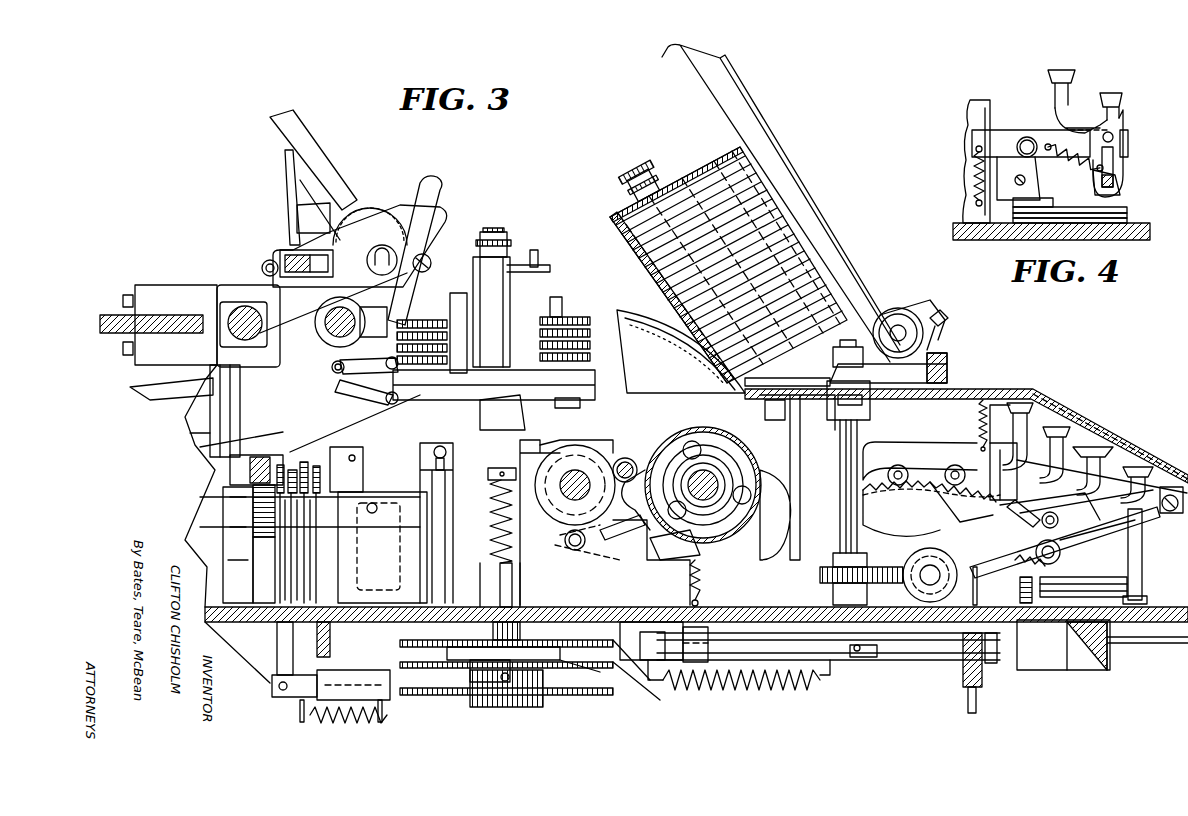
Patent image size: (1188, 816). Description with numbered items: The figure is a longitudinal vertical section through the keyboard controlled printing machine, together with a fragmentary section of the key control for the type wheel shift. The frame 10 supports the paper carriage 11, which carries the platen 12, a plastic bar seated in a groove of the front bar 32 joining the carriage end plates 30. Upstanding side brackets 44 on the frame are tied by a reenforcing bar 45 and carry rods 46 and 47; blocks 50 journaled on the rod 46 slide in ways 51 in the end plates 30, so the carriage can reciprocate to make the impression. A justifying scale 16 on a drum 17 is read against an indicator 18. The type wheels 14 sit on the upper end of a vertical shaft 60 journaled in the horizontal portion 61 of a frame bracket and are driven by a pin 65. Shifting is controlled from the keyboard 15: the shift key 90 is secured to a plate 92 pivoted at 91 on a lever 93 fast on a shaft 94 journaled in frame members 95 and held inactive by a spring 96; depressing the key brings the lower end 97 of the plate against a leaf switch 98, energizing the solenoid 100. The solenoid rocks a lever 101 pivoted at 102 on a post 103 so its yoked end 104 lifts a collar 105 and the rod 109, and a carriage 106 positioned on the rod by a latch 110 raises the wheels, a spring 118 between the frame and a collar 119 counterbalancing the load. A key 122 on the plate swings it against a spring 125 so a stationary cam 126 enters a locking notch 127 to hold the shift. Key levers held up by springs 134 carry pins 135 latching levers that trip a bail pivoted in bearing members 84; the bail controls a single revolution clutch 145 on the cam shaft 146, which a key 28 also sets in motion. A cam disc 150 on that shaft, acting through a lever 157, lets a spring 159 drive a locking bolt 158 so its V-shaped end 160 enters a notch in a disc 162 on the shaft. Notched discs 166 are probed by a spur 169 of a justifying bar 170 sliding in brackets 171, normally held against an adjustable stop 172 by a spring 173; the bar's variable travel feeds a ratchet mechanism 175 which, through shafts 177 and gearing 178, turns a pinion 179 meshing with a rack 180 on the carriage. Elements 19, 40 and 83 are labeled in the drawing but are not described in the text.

In FIG. 3, the frame 10 is at (572, 605).
In FIG. 4, the frame 10 is at (1150, 236).
In FIG. 3, the paper carriage 11 is at (428, 250).
In FIG. 3, the platen 12 is at (378, 291).
In FIG. 3, the type wheels 14 is at (590, 322).
In FIG. 3, the keyboard 15 is at (1123, 445).
In FIG. 3, the justifying scale 16 is at (628, 247).
In FIG. 3, the drum 17 is at (620, 215).
In FIG. 3, the indicator 18 is at (880, 312).
In FIG. 3, the pawl 19 is at (938, 318).
In FIG. 3, the key 28 is at (1053, 395).
In FIG. 3, the end plates 30 is at (295, 320).
In FIG. 3, the frame member or bar 32 is at (270, 260).
In FIG. 3, the toothed wheel 40 is at (372, 222).
In FIG. 3, the side brackets 44 is at (160, 285).
In FIG. 3, the reenforcing bar 45 is at (120, 313).
In FIG. 3, the rod 46 is at (228, 333).
In FIG. 3, the rod 47 is at (318, 322).
In FIG. 3, the blocks 50 is at (258, 372).
In FIG. 3, the ways 51 is at (212, 383).
In FIG. 3, the shaft 60 is at (508, 708).
In FIG. 3, the horizontally extending portion 61 is at (580, 404).
In FIG. 3, the pin or rod 65 is at (562, 313).
In FIG. 3, the disk 83 is at (578, 470).
In FIG. 3, the bearing members 84 is at (605, 522).
In FIG. 3, the shift key 90 is at (1140, 468).
In FIG. 4, the shift key 90 is at (1120, 93).
In FIG. 4, the pivot 91 is at (1114, 137).
In FIG. 4, the plate 92 is at (1123, 118).
In FIG. 3, the lever 93 is at (1092, 556).
In FIG. 4, the lever 93 is at (1045, 130).
In FIG. 3, the shaft 94 is at (1062, 530).
In FIG. 4, the shaft 94 is at (1025, 140).
In FIG. 3, the frame members 95 is at (1017, 486).
In FIG. 4, the frame members 95 is at (982, 106).
In FIG. 3, the spring 96 is at (1145, 595).
In FIG. 4, the spring 96 is at (975, 175).
In FIG. 3, the lower end 97 is at (1144, 575).
In FIG. 4, the lower end 97 is at (1118, 192).
In FIG. 4, the leaf-type switch 98 is at (1128, 213).
In FIG. 3, the solenoid 100 is at (382, 547).
In FIG. 3, the lever 101 is at (364, 456).
In FIG. 3, the pivot 102 is at (446, 452).
In FIG. 3, the frame bracket or post 103 is at (498, 535).
In FIG. 3, the yoked end 104 is at (610, 420).
In FIG. 3, the collar 105 is at (545, 445).
In FIG. 3, the carriage 106 is at (505, 292).
In FIG. 3, the rod 109 is at (498, 548).
In FIG. 3, the latch 110 is at (540, 270).
In FIG. 3, the spring 118 is at (490, 514).
In FIG. 3, the collar 119 is at (492, 492).
In FIG. 3, the key 122 is at (1090, 452).
In FIG. 4, the key 122 is at (1062, 70).
In FIG. 4, the spring 125 is at (1075, 165).
In FIG. 4, the stationary cam member 126 is at (1113, 180).
In FIG. 4, the locking notch 127 is at (1113, 155).
In FIG. 3, the springs 134 is at (978, 411).
In FIG. 3, the pin 135 is at (960, 446).
In FIG. 3, the single revolution clutch 145 is at (668, 447).
In FIG. 3, the cam shaft 146 is at (712, 472).
In FIG. 3, the cam disc 150 is at (612, 545).
In FIG. 3, the lever 157 is at (264, 628).
In FIG. 3, the locking bolt 158 is at (283, 700).
In FIG. 3, the spring 159 is at (340, 727).
In FIG. 3, the V-shaped end 160 is at (402, 695).
In FIG. 3, the disc 162 is at (565, 696).
In FIG. 3, the discs 166 is at (610, 674).
In FIG. 3, the spur 169 is at (636, 646).
In FIG. 3, the justifying bar 170 is at (828, 646).
In FIG. 3, the brackets 171 is at (708, 630).
In FIG. 3, the adjustable stop 172 is at (987, 663).
In FIG. 3, the spring 173 is at (780, 690).
In FIG. 3, the ratchet mechanism 175 is at (929, 500).
In FIG. 3, the shafts 177 is at (213, 565).
In FIG. 3, the gearing 178 is at (297, 476).
In FIG. 3, the pinion 179 is at (222, 497).
In FIG. 3, the rack 180 is at (262, 456).